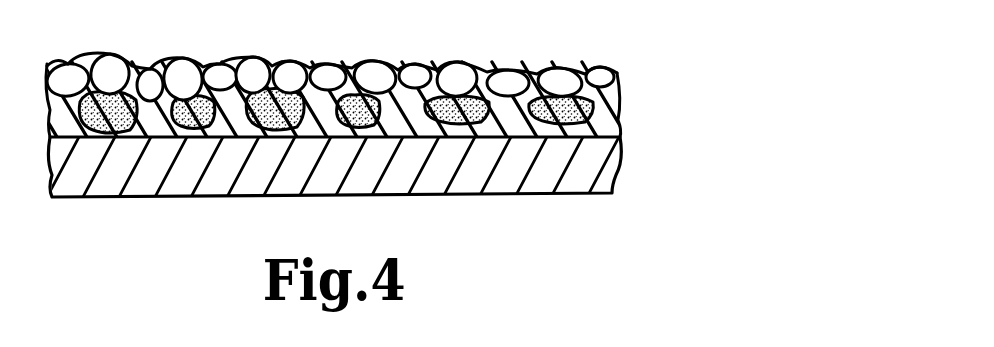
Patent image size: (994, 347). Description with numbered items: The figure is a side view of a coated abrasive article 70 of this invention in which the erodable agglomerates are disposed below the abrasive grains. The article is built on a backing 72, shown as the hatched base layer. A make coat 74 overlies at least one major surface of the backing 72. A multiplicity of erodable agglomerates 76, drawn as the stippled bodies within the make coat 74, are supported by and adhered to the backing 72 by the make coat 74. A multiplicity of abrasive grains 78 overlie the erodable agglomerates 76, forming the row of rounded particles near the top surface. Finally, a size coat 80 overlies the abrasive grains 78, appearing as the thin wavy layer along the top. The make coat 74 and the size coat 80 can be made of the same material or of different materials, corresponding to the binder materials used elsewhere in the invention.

The coated abrasive article 70 is at (375, 131).
The backing 72 is at (578, 173).
The make coat 74 is at (597, 125).
The erodable agglomerates 76 is at (402, 98).
The abrasive grains 78 is at (455, 78).
The size coat 80 is at (608, 75).